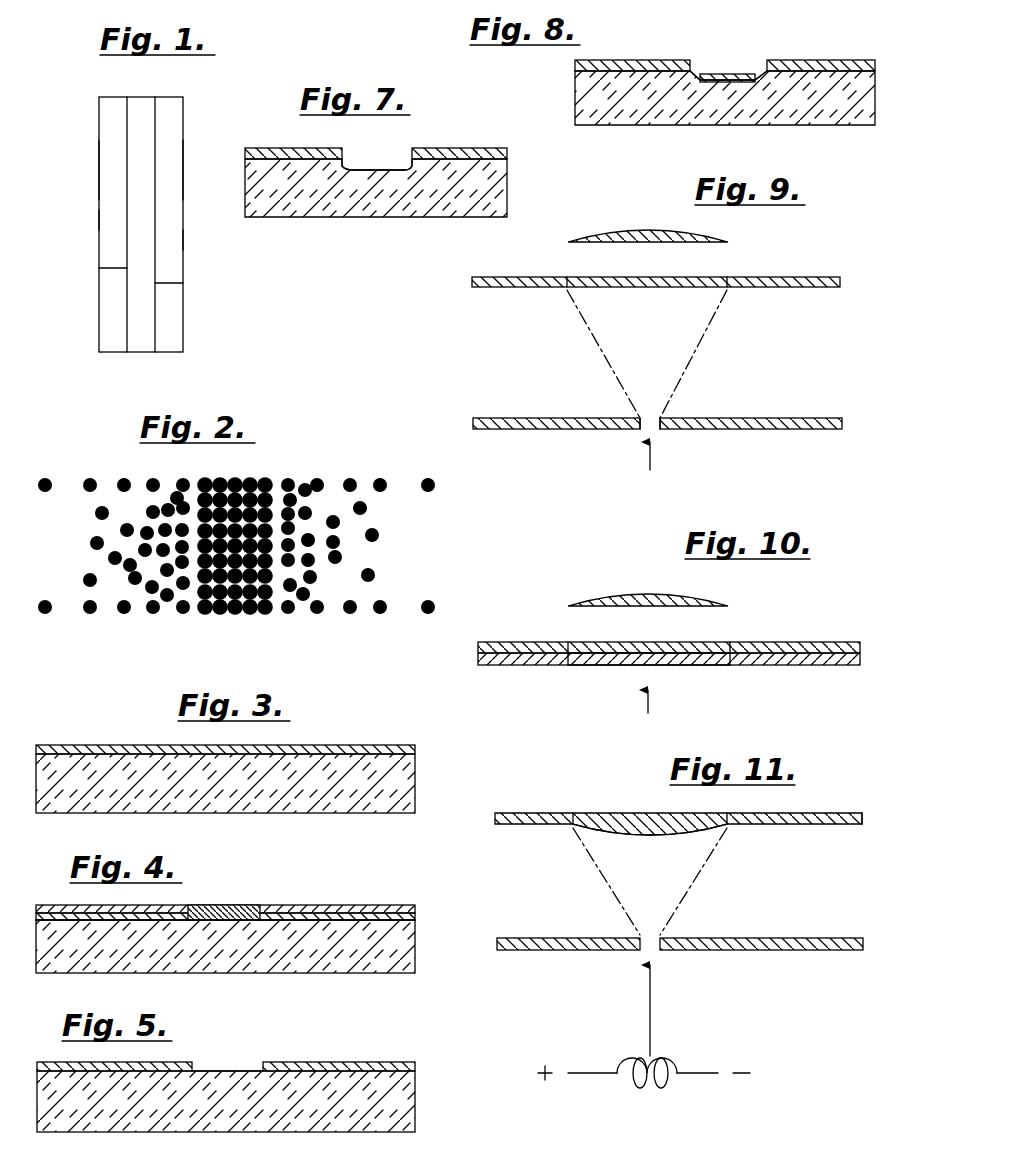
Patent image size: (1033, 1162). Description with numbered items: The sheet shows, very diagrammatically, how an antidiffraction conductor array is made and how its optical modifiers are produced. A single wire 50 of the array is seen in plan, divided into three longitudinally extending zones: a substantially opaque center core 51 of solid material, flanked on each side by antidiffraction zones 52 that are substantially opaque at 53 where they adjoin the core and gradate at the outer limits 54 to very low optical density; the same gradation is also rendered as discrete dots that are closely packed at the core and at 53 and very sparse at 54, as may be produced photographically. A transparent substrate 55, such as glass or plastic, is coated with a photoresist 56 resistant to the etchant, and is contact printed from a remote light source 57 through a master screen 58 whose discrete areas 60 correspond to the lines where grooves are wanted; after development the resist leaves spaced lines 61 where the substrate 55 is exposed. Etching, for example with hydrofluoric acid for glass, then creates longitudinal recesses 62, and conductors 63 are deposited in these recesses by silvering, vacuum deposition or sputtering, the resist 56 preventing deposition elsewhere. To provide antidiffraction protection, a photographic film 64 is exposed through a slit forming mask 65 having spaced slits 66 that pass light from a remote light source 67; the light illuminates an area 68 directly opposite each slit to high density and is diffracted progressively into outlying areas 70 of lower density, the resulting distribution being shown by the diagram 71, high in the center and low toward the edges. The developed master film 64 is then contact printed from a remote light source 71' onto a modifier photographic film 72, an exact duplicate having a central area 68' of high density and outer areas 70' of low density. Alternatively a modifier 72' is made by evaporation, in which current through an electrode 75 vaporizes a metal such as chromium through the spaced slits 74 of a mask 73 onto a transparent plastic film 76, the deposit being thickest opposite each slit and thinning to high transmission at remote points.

In FIG. 1, the wire 50 is at (142, 97).
In FIG. 2, the wire 50 is at (248, 483).
In FIG. 1, the center core 51 is at (143, 135).
In FIG. 1, the antidiffraction zones 52 is at (108, 162).
In FIG. 2, the antidiffraction zones 52 is at (108, 606).
In FIG. 1, the zone portion adjoining the core 53 is at (127, 268).
In FIG. 2, the zone portion adjoining the core 53 is at (172, 612).
In FIG. 1, the outer limits 54 is at (99, 220).
In FIG. 2, the outer limits 54 is at (45, 492).
In FIG. 3, the substrate 55 is at (345, 800).
In FIG. 4, the substrate 55 is at (345, 968).
In FIG. 5, the substrate 55 is at (350, 1124).
In FIG. 7, the substrate 55 is at (452, 212).
In FIG. 8, the substrate 55 is at (815, 120).
In FIG. 3, the photoresist 56 is at (332, 745).
In FIG. 4, the photoresist 56 is at (358, 920).
In FIG. 5, the photoresist 56 is at (380, 1062).
In FIG. 7, the photoresist 56 is at (497, 148).
In FIG. 8, the photoresist 56 is at (817, 60).
In FIG. 4, the remote light source 57 is at (226, 895).
In FIG. 4, the master screen 58 is at (335, 905).
In FIG. 4, the discrete areas 60 is at (245, 905).
In FIG. 4, the spaced lines 61 is at (222, 920).
In FIG. 5, the spaced lines 61 is at (250, 1050).
In FIG. 7, the longitudinal recesses 62 is at (368, 172).
In FIG. 8, the longitudinal recesses 62 is at (700, 83).
In FIG. 8, the conductors 63 is at (715, 74).
In FIG. 9, the photographic film 64 is at (808, 288).
In FIG. 10, the photographic film 64 is at (818, 665).
In FIG. 9, the slit forming mask 65 is at (790, 403).
In FIG. 9, the slits 66 is at (650, 415).
In FIG. 9, the remote light source 67 is at (655, 462).
In FIG. 9, the area directly opposite the slit 68 is at (647, 353).
In FIG. 10, the area directly opposite the slit 68 is at (649, 686).
In FIG. 9, the outlying areas 70 is at (653, 267).
In FIG. 10, the outlying areas 70 is at (640, 680).
In FIG. 9, the diagram 71 is at (648, 224).
In FIG. 10, the diagram 71 is at (648, 583).
In FIG. 10, the modifier photographic film 72 is at (669, 633).
In FIG. 11, the mask 73 is at (775, 938).
In FIG. 11, the slits 74 is at (660, 935).
In FIG. 11, the electrode 75 is at (660, 1063).
In FIG. 11, the transparent plastic film 76 is at (835, 826).
In FIG. 10, the areas of low optical density 70' is at (653, 633).
In FIG. 10, the area of high optical density 68' is at (649, 634).
In FIG. 10, the remote light source 71' is at (675, 700).
In FIG. 11, the modifier 72' is at (681, 802).